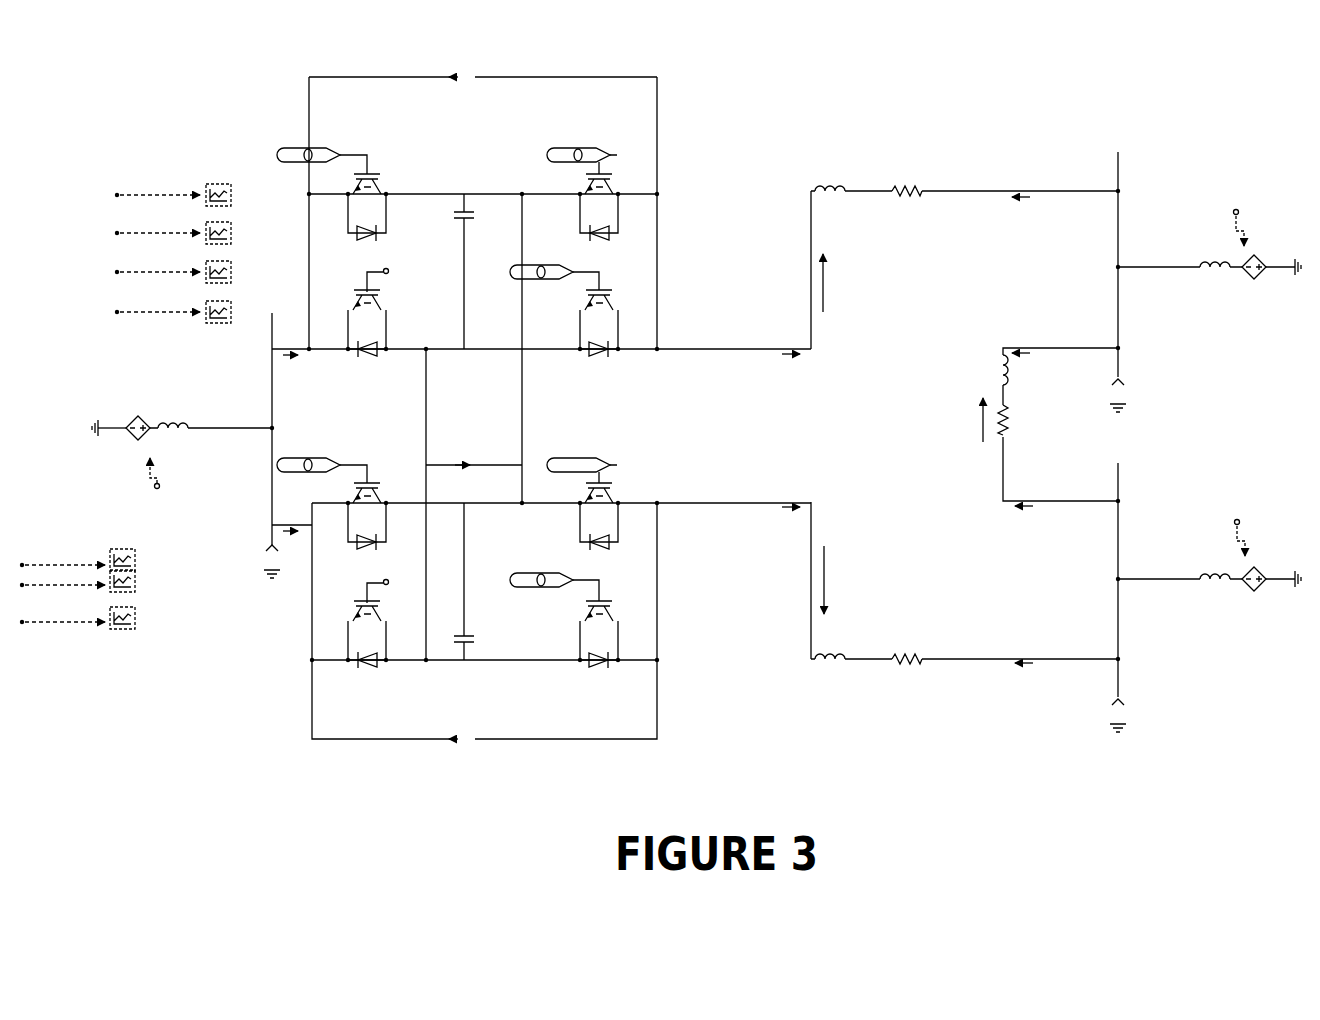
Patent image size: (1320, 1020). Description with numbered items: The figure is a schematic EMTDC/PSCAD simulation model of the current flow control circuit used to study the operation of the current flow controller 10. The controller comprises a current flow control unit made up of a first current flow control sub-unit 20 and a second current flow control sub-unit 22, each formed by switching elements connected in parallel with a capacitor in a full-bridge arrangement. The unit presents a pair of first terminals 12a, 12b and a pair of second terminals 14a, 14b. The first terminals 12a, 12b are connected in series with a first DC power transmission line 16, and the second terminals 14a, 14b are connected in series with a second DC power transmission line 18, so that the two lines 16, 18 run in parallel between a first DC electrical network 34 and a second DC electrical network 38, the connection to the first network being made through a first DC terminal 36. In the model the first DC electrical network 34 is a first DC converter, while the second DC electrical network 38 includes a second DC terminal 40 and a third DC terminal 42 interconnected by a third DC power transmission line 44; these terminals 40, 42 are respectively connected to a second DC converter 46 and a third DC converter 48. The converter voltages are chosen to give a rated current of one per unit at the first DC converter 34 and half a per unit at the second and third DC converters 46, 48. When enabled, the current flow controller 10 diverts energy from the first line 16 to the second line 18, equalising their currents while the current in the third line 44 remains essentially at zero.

The current flow controller 10 is at (612, 403).
The first terminal 12a is at (312, 352).
The first terminal 12b is at (660, 343).
The second terminal 14a is at (308, 533).
The second terminal 14b is at (662, 510).
The first DC power transmission line 16 is at (950, 188).
The second DC power transmission line 18 is at (945, 650).
The first current flow control sub-unit 20 is at (628, 252).
The second current flow control sub-unit 22 is at (620, 572).
The first DC electrical network 34 is at (116, 414).
The first DC terminal 36 is at (282, 429).
The second DC electrical network 38 is at (1175, 658).
The second DC terminal 40 is at (1115, 266).
The third DC terminal 42 is at (1121, 582).
The third DC power transmission line 44 is at (1003, 342).
The second DC converter 46 is at (1272, 246).
The third DC converter 48 is at (1272, 562).